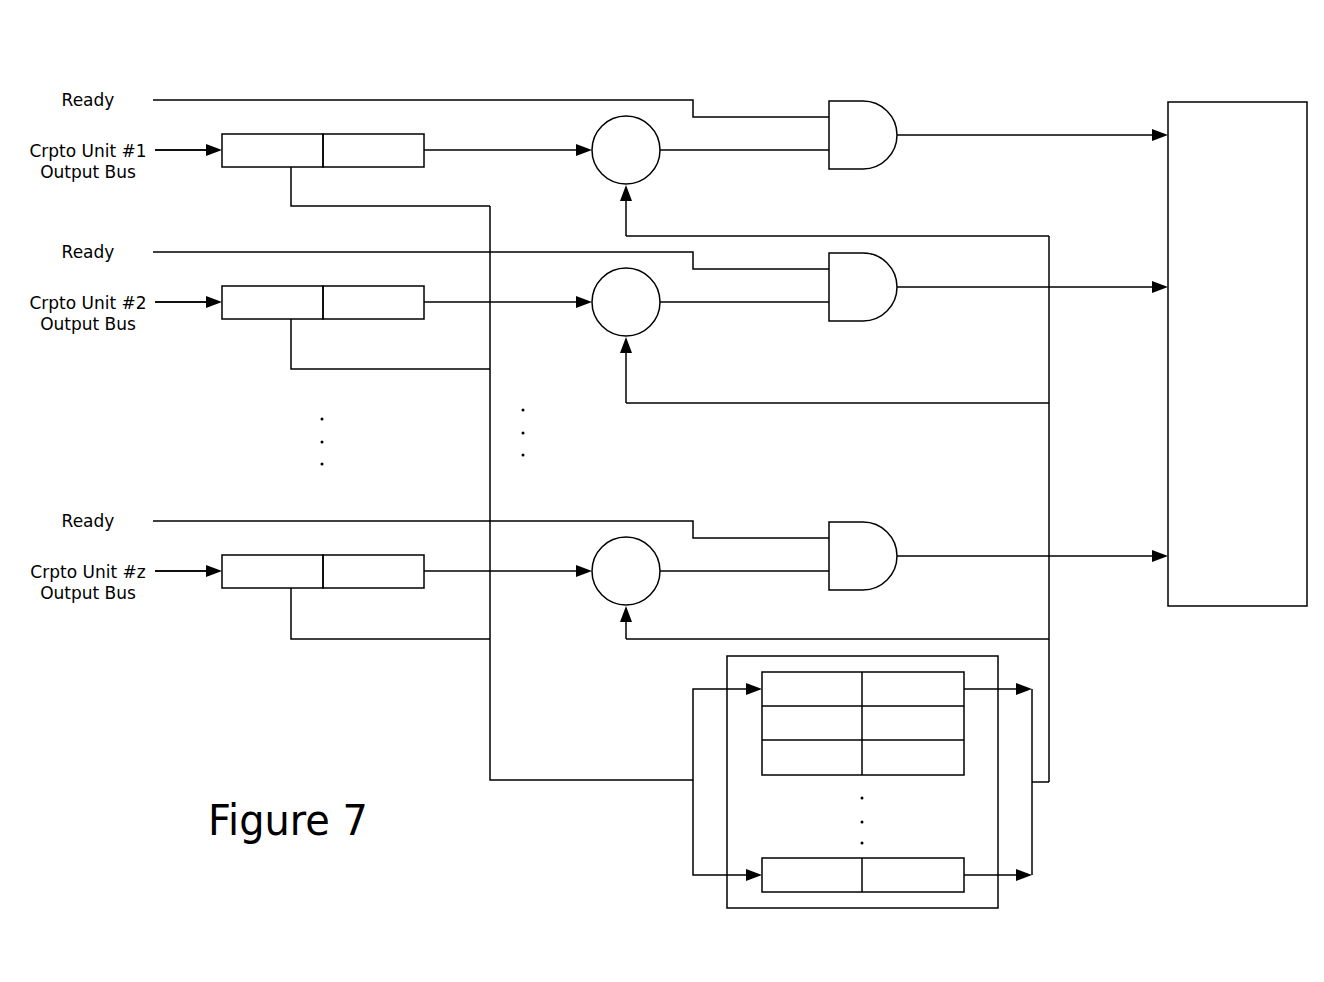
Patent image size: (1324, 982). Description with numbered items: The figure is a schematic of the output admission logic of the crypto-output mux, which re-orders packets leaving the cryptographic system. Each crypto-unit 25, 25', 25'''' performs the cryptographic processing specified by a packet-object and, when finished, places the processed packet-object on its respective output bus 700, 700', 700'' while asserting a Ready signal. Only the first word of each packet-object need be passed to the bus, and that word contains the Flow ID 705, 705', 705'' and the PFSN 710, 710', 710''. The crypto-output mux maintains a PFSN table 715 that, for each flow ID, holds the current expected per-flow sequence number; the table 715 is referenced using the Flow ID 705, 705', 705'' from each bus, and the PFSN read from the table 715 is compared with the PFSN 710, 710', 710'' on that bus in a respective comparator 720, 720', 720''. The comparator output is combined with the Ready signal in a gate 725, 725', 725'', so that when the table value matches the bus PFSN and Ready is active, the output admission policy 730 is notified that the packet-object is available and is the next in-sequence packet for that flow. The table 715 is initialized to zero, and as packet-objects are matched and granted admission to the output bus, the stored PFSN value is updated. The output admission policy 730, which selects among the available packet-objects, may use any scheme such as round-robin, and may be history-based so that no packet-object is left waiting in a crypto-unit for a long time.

The crypto-unit 25 is at (149, 137).
The crypto-unit 25' is at (148, 289).
The crypto-unit 25'''' is at (145, 558).
The output bus 700 is at (195, 170).
The output bus 700' is at (197, 321).
The output bus 700'' is at (200, 590).
The Flow ID 705 is at (239, 188).
The Flow ID 705' is at (235, 340).
The Flow ID 705'' is at (240, 609).
The PFSN 710 is at (401, 170).
The PFSN 710' is at (403, 321).
The PFSN 710'' is at (405, 591).
The PFSN table 715 is at (998, 893).
The comparator 720 is at (569, 176).
The comparator 720' is at (573, 335).
The comparator 720'' is at (575, 588).
The AND gate 725 is at (998, 135).
The AND gate 725' is at (998, 287).
The AND gate 725'' is at (998, 556).
The output admission policy 730 is at (1237, 354).